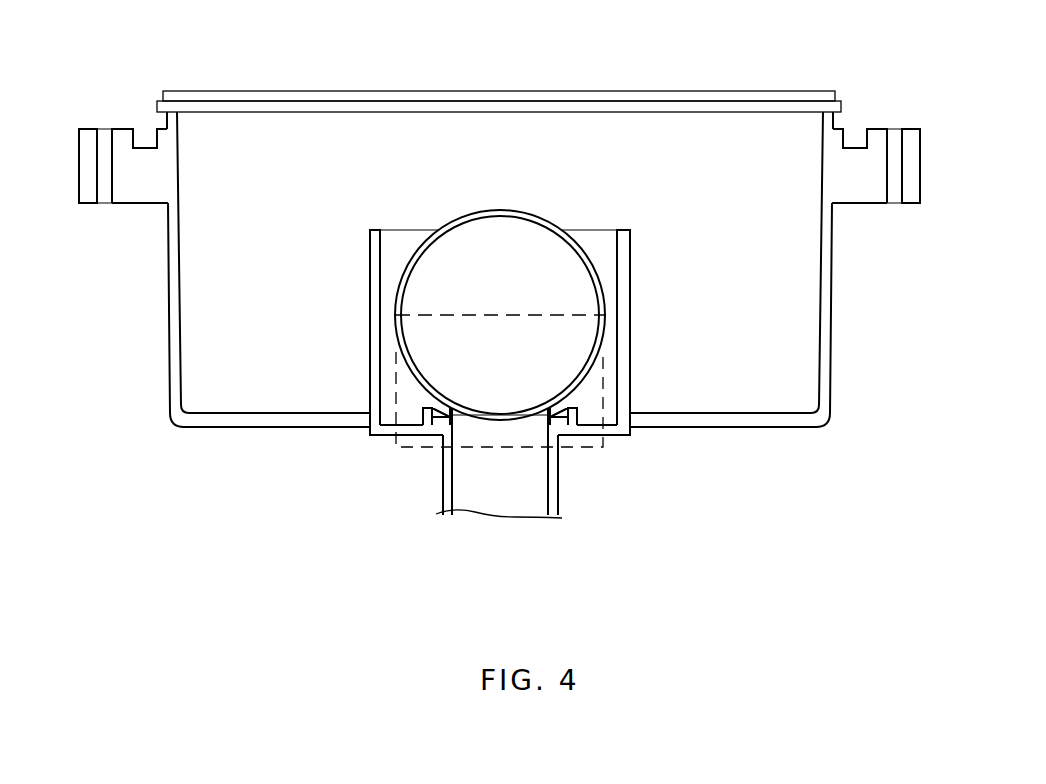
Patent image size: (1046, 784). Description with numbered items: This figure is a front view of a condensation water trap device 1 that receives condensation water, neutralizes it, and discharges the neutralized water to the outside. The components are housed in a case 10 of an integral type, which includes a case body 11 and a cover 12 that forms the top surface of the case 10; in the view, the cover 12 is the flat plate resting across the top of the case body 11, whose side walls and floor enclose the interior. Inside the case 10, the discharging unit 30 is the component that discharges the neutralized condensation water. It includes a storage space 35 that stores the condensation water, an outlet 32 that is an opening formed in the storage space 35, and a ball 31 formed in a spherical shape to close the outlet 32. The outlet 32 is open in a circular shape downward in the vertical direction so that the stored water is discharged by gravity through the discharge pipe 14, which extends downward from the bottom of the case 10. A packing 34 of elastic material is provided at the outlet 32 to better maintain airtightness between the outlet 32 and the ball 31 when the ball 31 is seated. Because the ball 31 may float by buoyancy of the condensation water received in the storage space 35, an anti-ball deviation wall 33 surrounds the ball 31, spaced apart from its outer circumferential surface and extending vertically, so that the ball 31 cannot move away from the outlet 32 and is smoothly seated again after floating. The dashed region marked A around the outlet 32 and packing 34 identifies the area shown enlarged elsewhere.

The condensation water trap device 1 is at (499, 279).
The case 10 is at (852, 115).
The case body 11 is at (170, 353).
The cover 12 is at (170, 93).
The discharge pipe 14 is at (446, 497).
The discharging unit 30 is at (617, 343).
The ball 31 is at (530, 221).
The outlet 32 is at (538, 432).
The anti-ball deviation wall 33 is at (625, 257).
The packing 34 is at (432, 419).
The storage space 35 is at (283, 348).
The area A is at (603, 446).